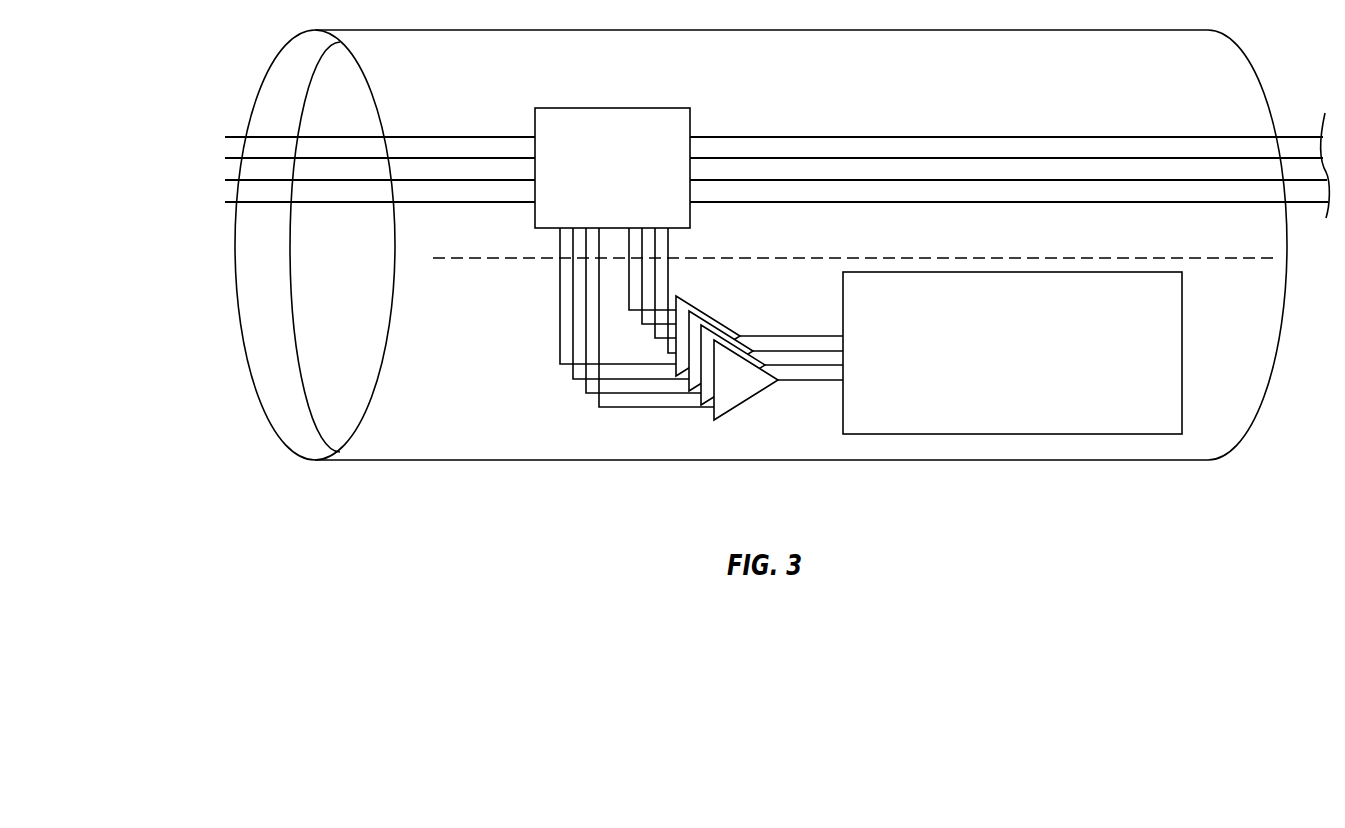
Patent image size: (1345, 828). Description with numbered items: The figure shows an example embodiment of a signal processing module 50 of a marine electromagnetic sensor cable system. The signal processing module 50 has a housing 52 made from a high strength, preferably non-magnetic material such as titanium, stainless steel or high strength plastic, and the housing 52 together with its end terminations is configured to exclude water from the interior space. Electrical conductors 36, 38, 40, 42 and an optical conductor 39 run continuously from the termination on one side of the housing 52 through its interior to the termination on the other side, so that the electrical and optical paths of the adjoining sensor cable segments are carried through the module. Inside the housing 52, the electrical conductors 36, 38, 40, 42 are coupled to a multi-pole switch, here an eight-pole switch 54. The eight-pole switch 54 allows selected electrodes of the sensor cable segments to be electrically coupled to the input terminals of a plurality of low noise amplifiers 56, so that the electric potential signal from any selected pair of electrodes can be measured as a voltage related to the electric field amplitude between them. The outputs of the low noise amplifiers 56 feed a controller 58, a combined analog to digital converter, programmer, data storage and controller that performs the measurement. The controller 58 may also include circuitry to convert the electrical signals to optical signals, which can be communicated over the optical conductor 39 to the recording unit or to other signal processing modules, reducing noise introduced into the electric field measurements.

The signal processing module 50 is at (717, 269).
The housing 52 is at (758, 30).
The electrical conductor 36 is at (225, 137).
The electrical conductor 38 is at (225, 158).
The electrical conductor 40 is at (225, 180).
The electrical conductor 42 is at (225, 202).
The eight-pole switch 54 is at (610, 108).
The optical conductor 39 is at (845, 258).
The low noise amplifier 56 is at (745, 402).
The controller 58 is at (1012, 434).